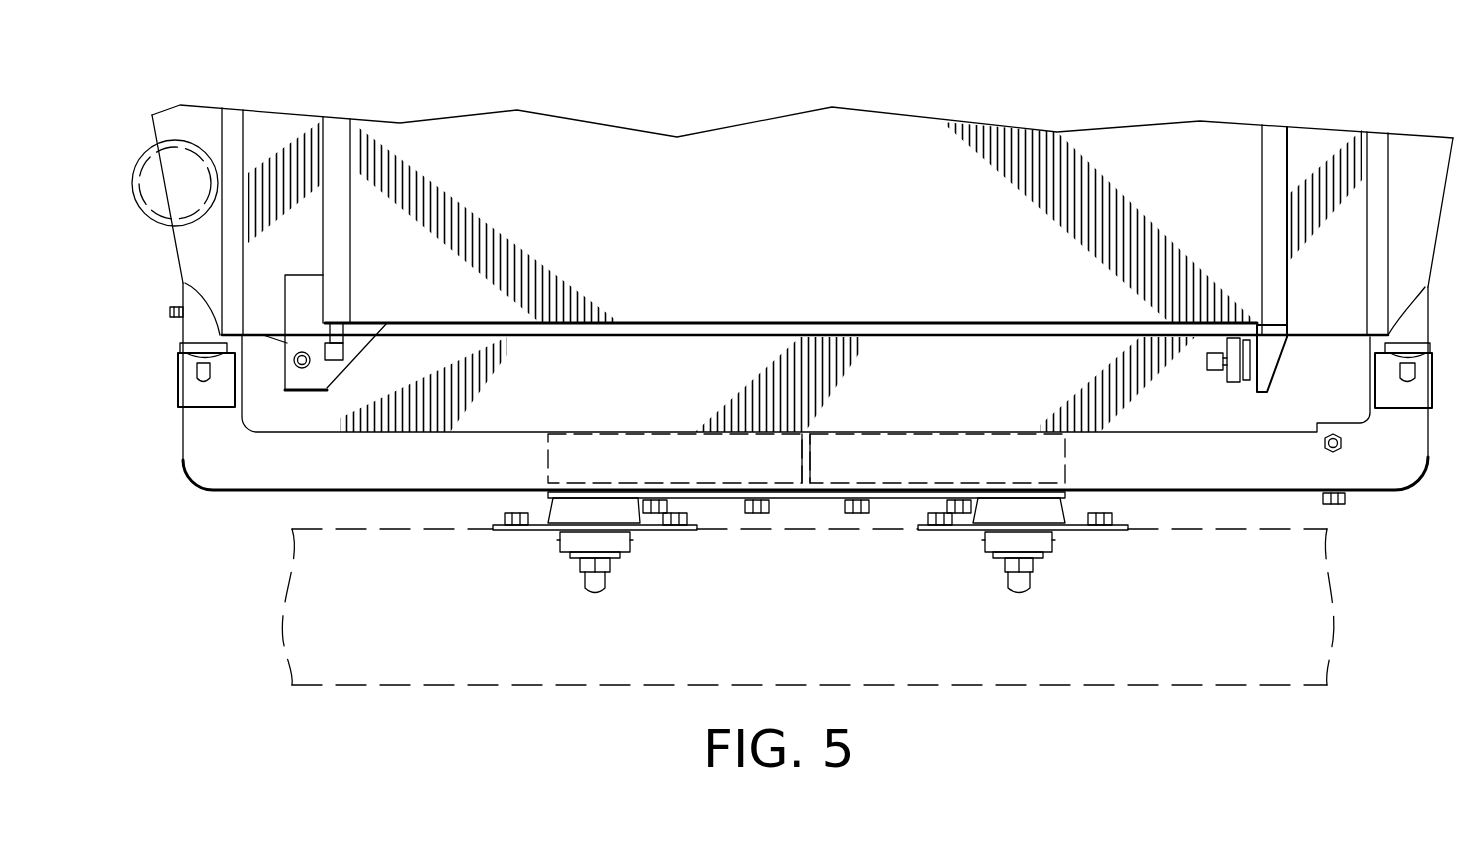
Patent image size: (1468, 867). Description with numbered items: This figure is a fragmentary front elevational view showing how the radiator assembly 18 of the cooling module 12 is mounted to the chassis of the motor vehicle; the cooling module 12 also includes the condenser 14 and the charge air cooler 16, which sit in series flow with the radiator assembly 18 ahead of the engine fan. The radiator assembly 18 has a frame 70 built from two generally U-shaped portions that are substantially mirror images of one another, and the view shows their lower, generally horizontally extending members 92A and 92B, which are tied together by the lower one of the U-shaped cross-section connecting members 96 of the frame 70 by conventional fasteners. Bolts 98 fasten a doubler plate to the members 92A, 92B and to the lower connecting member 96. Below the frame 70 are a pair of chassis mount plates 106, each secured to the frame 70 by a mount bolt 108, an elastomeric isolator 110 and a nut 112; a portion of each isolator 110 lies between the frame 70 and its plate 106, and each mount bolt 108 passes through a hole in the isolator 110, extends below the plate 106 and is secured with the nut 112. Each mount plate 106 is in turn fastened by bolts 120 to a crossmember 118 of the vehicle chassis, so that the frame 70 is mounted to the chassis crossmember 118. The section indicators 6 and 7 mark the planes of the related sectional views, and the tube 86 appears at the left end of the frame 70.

The section line 6- 6 is at (775, 314).
The section line 7- 7 is at (512, 351).
The cooling module 12 is at (1082, 88).
The condenser 14 is at (1000, 246).
The charge air cooler 16 is at (1298, 138).
The radiator assembly 18 is at (1427, 493).
The frame 70 is at (183, 433).
The tube 86 is at (135, 157).
The lower generally horizontally extending member 92A is at (280, 477).
The lower generally horizontally extending member 92B is at (1248, 453).
The connecting member 96 is at (1067, 445).
The bolts 98 is at (867, 508).
The chassis mount plate 106 is at (533, 531).
The mount bolt 108 is at (608, 588).
The elastomeric isolator 110 is at (560, 545).
The nut 112 is at (620, 558).
The crossmember 118 is at (980, 687).
The bolts 120 is at (505, 510).